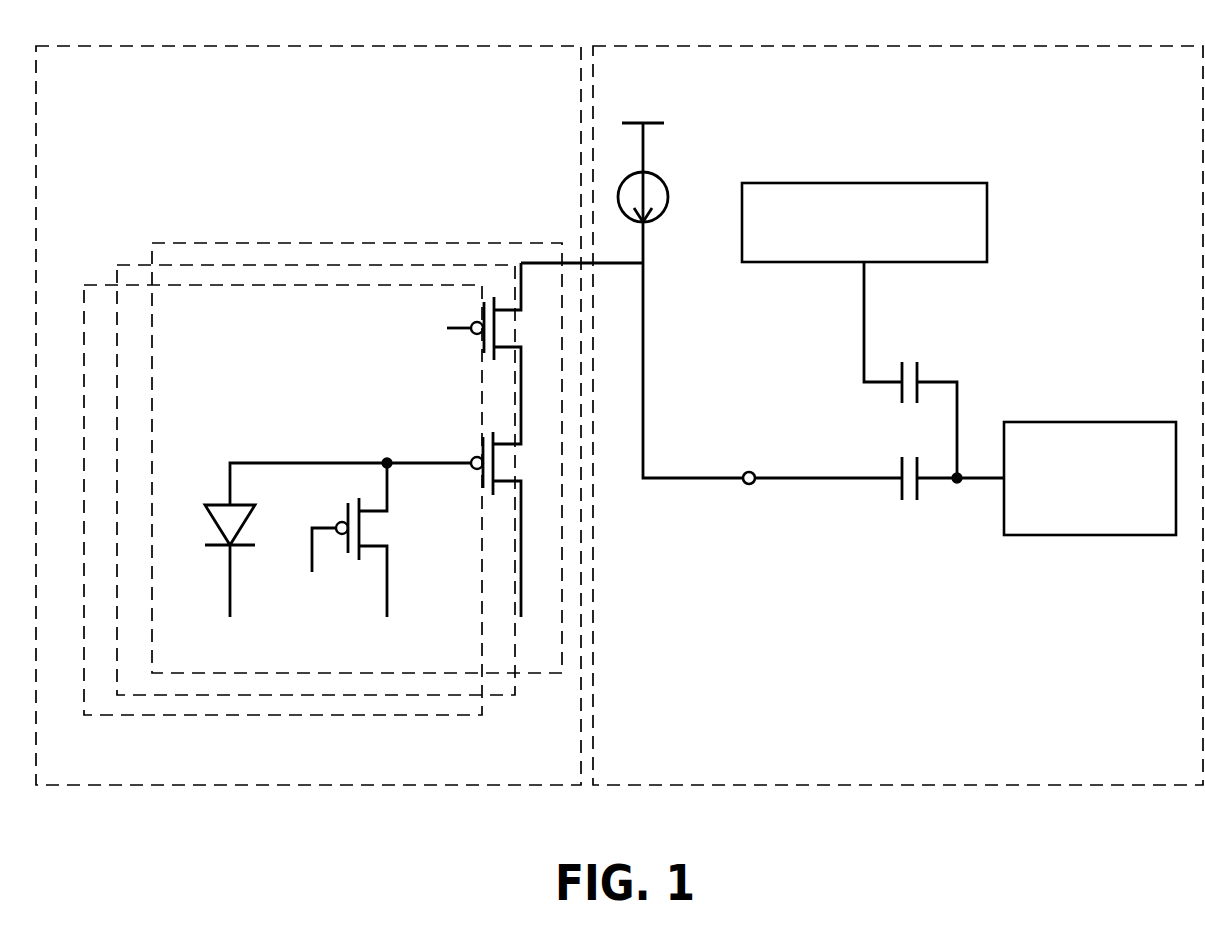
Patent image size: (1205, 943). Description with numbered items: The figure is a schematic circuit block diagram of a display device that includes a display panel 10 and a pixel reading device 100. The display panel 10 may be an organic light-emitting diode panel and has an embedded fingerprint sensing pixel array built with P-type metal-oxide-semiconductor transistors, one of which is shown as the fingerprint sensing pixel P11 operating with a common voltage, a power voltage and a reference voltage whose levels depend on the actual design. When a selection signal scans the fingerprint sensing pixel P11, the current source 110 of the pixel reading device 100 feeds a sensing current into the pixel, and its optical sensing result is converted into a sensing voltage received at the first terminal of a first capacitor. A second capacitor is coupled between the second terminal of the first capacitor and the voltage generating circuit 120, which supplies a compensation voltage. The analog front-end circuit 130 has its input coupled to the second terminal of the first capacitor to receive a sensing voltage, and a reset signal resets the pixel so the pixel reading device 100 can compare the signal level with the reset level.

The display panel 10 is at (339, 441).
The fingerprint sensing pixel P11 is at (380, 243).
The pixel reading device 100 is at (898, 441).
The current source 110 is at (660, 176).
The voltage generating circuit 120 is at (987, 230).
The analog front-end circuit 130 is at (1073, 420).